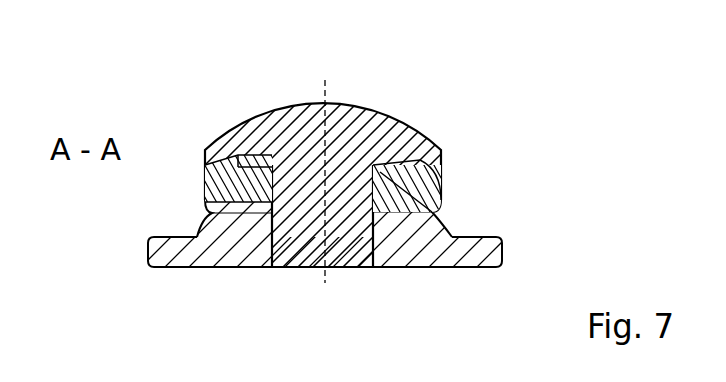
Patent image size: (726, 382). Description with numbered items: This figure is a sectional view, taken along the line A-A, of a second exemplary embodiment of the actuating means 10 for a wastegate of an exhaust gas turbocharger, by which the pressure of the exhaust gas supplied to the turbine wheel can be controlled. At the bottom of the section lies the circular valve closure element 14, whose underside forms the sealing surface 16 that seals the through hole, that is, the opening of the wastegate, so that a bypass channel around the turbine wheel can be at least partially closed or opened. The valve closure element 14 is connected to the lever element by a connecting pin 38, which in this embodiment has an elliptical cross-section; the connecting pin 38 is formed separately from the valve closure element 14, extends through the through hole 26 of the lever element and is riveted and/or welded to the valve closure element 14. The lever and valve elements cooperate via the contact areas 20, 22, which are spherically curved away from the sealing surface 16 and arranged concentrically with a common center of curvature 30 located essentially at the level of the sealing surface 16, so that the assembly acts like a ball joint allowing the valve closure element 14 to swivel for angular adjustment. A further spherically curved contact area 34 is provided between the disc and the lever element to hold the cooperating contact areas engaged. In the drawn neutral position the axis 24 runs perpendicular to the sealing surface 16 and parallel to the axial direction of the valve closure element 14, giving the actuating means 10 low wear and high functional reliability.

The actuating means 10 is at (576, 237).
The valve closure element 14 is at (232, 245).
The sealing surface 16 is at (457, 266).
The contact area 20 is at (397, 268).
The contact area 22 is at (442, 218).
The axis 24 is at (330, 138).
The through hole 26 is at (430, 143).
The center of curvature 30 is at (327, 260).
The contact area 34 is at (152, 266).
The connecting pin 38 is at (282, 141).